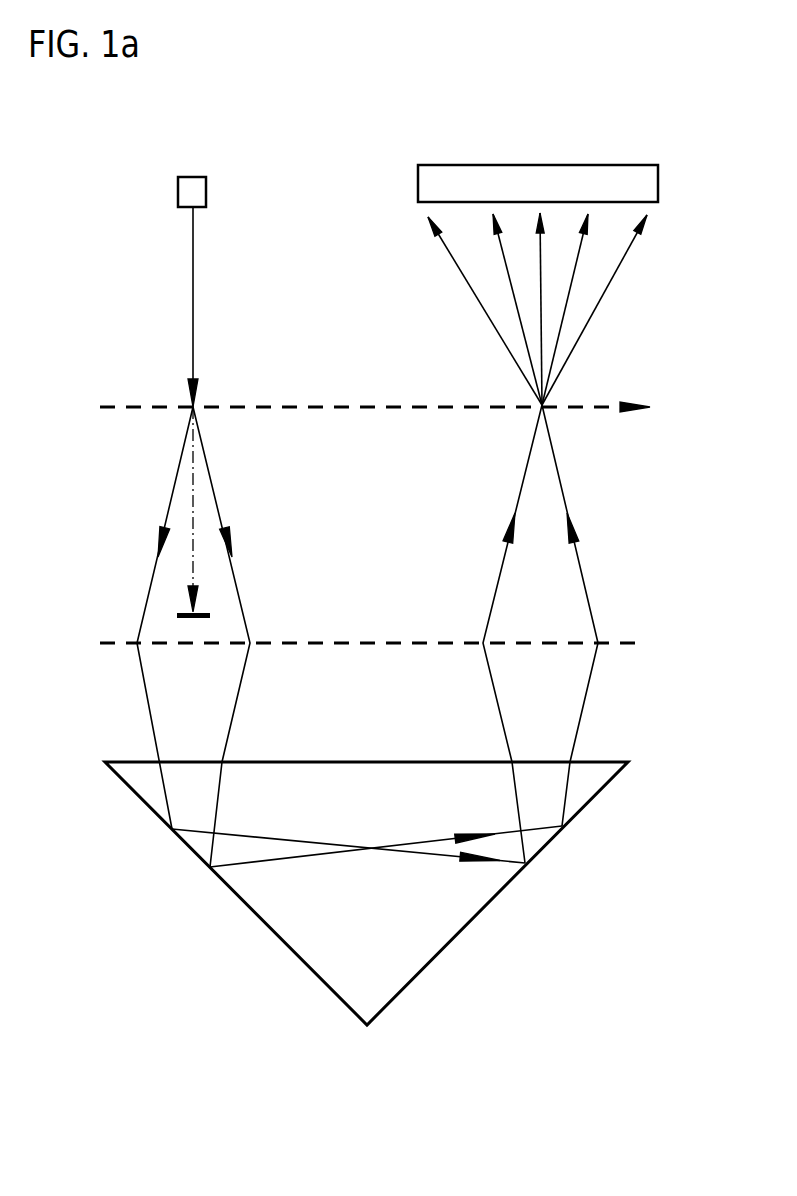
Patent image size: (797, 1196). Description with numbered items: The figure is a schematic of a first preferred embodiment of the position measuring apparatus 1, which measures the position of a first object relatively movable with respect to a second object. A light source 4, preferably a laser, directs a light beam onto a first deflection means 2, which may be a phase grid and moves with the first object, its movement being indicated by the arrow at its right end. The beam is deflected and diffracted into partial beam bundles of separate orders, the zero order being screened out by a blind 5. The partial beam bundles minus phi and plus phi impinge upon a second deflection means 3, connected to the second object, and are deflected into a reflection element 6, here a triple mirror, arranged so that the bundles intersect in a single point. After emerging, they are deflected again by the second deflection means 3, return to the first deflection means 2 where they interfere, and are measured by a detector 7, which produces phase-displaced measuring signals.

The optical system 1 is at (392, 592).
The first deflection means 2 is at (135, 405).
The second deflection means 3 is at (116, 641).
The light source 4 is at (195, 190).
The blind 5 is at (181, 612).
The reflection element 6 is at (393, 932).
The detector 7 is at (608, 180).